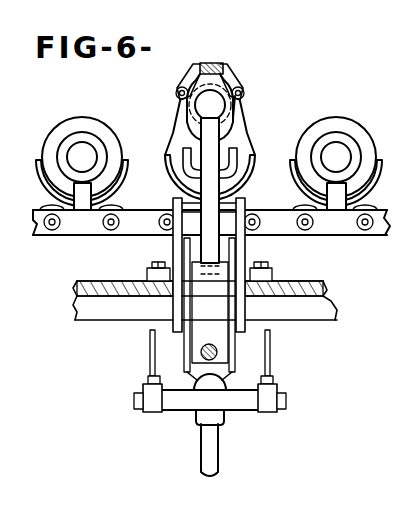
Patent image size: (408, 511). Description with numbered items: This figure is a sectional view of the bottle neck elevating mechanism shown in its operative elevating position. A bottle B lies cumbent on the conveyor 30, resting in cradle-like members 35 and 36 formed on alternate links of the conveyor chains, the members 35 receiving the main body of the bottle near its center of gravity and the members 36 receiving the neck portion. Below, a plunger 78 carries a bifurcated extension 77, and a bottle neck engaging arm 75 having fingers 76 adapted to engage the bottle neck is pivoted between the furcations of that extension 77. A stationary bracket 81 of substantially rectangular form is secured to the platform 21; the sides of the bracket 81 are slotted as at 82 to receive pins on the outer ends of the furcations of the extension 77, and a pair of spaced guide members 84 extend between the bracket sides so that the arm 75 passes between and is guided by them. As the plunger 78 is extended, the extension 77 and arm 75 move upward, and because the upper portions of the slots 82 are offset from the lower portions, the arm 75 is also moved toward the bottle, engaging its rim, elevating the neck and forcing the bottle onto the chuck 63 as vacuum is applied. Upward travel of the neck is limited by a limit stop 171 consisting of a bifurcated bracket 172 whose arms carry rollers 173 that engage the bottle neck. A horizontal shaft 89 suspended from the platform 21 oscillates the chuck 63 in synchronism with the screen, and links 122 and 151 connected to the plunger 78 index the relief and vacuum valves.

The conveyor 30 is at (82, 236).
The cradle-like member 35 is at (172, 182).
The cradle-like member 36 is at (193, 150).
The fingers 76 is at (185, 131).
The limit stop 171 is at (218, 66).
The bifurcated bracket 172 is at (226, 70).
The rollers 173 is at (248, 96).
The bottle neck engaging arm 75 is at (244, 108).
The bottle B is at (298, 140).
The guide members 84 is at (246, 199).
The slots 82 is at (172, 256).
The chuck 63 is at (246, 249).
The platform 21 is at (300, 283).
The stationary bracket 81 is at (175, 312).
The bifurcated extension 77 is at (233, 350).
The horizontal shaft 89 is at (204, 358).
The link 122 is at (150, 360).
The link 151 is at (282, 387).
The plunger 78 is at (214, 447).